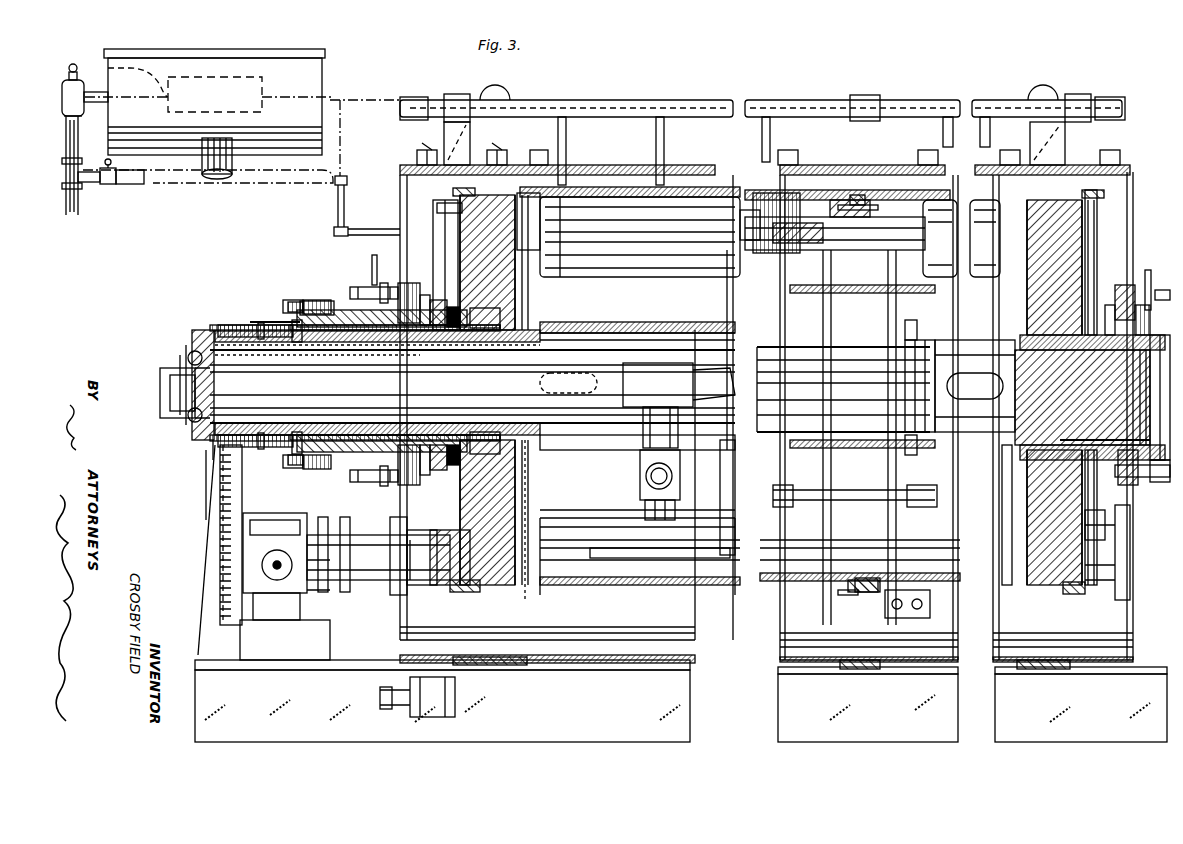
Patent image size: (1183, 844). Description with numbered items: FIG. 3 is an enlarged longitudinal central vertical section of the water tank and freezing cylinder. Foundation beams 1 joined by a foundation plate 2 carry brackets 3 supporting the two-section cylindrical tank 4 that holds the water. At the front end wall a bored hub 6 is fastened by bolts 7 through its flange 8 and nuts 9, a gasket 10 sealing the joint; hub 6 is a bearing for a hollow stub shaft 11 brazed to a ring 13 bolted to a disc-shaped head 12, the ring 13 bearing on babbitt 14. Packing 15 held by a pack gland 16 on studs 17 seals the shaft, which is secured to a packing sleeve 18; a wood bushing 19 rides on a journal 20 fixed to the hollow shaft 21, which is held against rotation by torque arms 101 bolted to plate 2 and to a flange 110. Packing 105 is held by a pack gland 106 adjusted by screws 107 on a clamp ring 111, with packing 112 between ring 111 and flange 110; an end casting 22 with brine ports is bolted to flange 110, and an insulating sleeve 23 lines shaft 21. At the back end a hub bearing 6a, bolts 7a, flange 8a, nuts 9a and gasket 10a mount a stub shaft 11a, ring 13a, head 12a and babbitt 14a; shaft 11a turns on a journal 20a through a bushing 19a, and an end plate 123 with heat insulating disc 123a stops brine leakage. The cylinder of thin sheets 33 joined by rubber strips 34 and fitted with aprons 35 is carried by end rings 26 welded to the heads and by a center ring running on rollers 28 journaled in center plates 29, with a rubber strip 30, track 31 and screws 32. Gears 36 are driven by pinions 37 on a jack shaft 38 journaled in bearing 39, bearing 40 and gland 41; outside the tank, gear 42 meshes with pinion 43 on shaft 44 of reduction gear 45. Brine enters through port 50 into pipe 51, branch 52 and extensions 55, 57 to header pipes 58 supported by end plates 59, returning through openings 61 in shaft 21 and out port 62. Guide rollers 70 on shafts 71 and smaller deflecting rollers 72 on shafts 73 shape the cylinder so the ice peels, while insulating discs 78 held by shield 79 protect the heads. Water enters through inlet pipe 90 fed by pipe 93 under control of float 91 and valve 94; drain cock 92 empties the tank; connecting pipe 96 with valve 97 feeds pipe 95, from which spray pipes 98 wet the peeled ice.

The foundation beams 1 is at (530, 725).
The foundation plate 2 is at (285, 665).
The brackets 3 is at (512, 670).
The cylindrical tank 4 is at (1135, 215).
The bored hub 6 is at (572, 92).
The bored hub bearing 6a is at (1150, 482).
The bolts 7 is at (355, 287).
The bolts 7a is at (1135, 490).
The flange 8 is at (382, 283).
The flange 8a is at (1152, 280).
The nuts 9 is at (376, 255).
The nuts 9a is at (1162, 290).
The gasket 10 is at (398, 283).
The gasket 10a is at (1148, 270).
The hollow stub shaft 11 is at (422, 295).
The hollow stub shaft 11a is at (1110, 300).
The disc-shaped head 12 is at (440, 250).
The disc-shaped head 12a is at (1110, 238).
The ring 13 is at (450, 305).
The ring 13a is at (1098, 280).
The babbitt 14 is at (437, 300).
The babbitt 14a is at (1142, 397).
The packing 15 is at (328, 292).
The pack gland 16 is at (298, 302).
The studs 17 is at (280, 310).
The packing sleeve 18 is at (275, 322).
The bushing 19 is at (355, 342).
The bushing 19a is at (1060, 365).
The journal 20 is at (385, 342).
The journal 20a is at (1092, 397).
The hollow shaft 21 is at (420, 342).
The end casting 22 is at (178, 402).
The sleeve of insulating material 23 is at (470, 342).
The end rings 26 is at (480, 192).
The rollers 28 is at (835, 270).
The center plates 29 is at (831, 305).
The rubber strip 30 is at (872, 200).
The track 31 is at (860, 200).
The screws 32 is at (850, 200).
The sheets 33 is at (605, 188).
The interior circumferential strips 34 is at (670, 190).
The aprons 35 is at (515, 175).
The gears 36 is at (463, 595).
The pinions 37 is at (435, 585).
The jack shaft 38 is at (285, 550).
The bearing 39 is at (1105, 585).
The bearing 40 is at (905, 618).
The gland 41 is at (370, 578).
The gear 42 is at (242, 498).
The pinion 43 is at (225, 595).
The shaft 44 is at (258, 625).
The reduction gear 45 is at (300, 592).
The port 50 is at (160, 378).
The pipe 51 is at (250, 405).
The branch pipe 52 is at (650, 430).
The extension 55 is at (680, 478).
The extension 57 is at (678, 508).
The header pipes 58 is at (565, 515).
The end plates 59 is at (540, 487).
The openings 61 is at (575, 395).
The port 62 is at (186, 355).
The guide rollers 70 is at (648, 322).
The shafts 71 is at (920, 335).
The deflecting roller 72 is at (603, 270).
The shafts 73 is at (745, 265).
The discs of heat insulating material 78 is at (495, 300).
The shield 79 is at (510, 315).
The inlet pipe 90 is at (212, 176).
The float 91 is at (218, 77).
The drain cock 92 is at (417, 697).
The source supply pipe 93 is at (80, 218).
The control valve 94 is at (62, 98).
The pipe 95 is at (718, 100).
The connecting pipe 96 is at (292, 185).
The valve 97 is at (112, 186).
The spray pipe 98 is at (656, 150).
The torque arms 101 is at (220, 486).
The packing 105 is at (322, 345).
The pack gland 106 is at (290, 345).
The right and left hand screws 107 is at (252, 322).
The flange 110 is at (222, 325).
The clamp ring 111 is at (235, 325).
The packing 112 is at (238, 355).
The end plate 123 is at (1148, 392).
The heat insulating disc 123a is at (1145, 410).